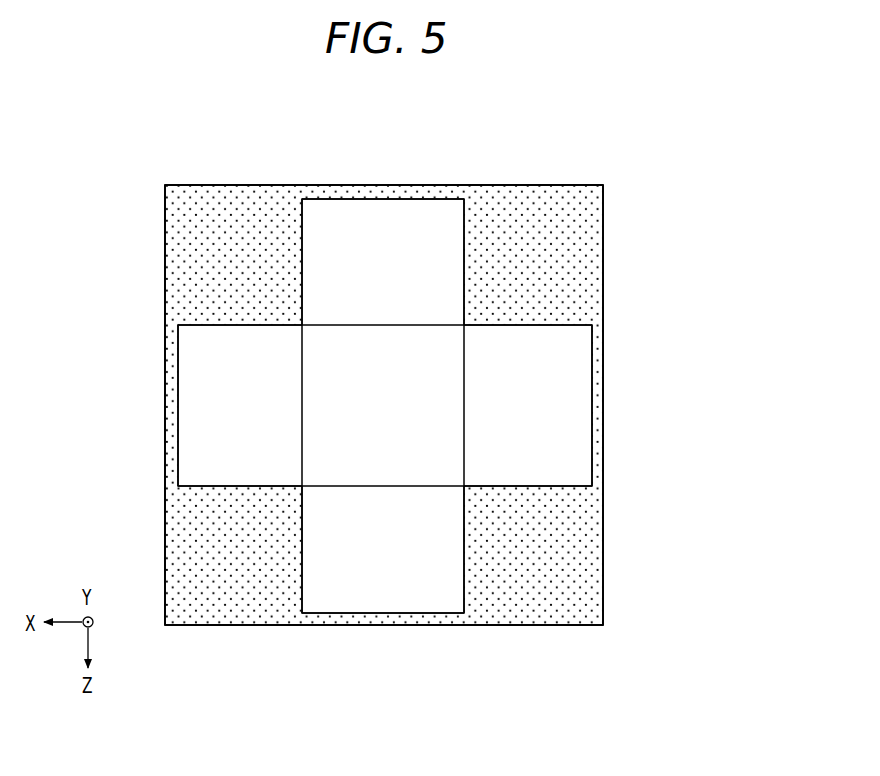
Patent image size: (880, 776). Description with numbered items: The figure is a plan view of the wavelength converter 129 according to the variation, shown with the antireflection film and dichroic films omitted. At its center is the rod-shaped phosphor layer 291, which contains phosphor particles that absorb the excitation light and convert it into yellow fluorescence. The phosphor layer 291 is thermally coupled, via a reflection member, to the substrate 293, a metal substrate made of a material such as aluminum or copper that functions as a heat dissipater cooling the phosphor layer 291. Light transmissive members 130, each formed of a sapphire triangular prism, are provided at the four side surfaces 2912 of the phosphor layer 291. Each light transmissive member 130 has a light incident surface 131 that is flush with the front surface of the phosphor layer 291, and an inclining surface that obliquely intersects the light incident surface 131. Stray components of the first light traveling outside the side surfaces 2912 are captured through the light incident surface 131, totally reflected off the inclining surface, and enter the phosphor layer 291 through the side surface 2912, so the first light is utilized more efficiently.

The wavelength converter 129 is at (626, 200).
The substrate 293 is at (187, 185).
The phosphor layer 291 is at (443, 452).
The side surfaces 2912 is at (389, 324).
The light incident surface 131 is at (326, 220).
The light transmissive members 130 is at (440, 197).